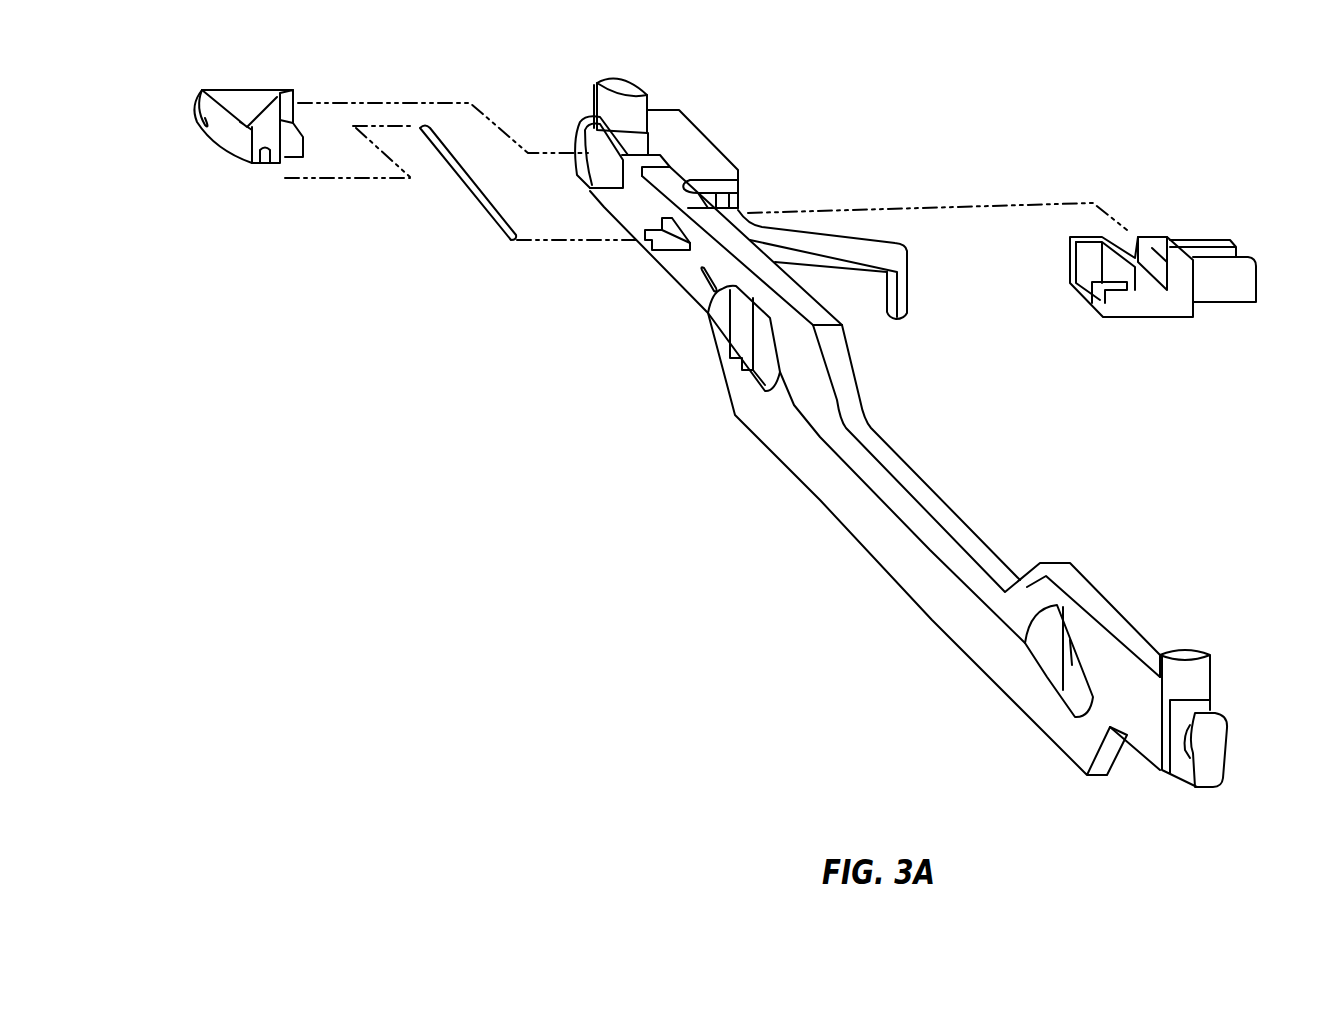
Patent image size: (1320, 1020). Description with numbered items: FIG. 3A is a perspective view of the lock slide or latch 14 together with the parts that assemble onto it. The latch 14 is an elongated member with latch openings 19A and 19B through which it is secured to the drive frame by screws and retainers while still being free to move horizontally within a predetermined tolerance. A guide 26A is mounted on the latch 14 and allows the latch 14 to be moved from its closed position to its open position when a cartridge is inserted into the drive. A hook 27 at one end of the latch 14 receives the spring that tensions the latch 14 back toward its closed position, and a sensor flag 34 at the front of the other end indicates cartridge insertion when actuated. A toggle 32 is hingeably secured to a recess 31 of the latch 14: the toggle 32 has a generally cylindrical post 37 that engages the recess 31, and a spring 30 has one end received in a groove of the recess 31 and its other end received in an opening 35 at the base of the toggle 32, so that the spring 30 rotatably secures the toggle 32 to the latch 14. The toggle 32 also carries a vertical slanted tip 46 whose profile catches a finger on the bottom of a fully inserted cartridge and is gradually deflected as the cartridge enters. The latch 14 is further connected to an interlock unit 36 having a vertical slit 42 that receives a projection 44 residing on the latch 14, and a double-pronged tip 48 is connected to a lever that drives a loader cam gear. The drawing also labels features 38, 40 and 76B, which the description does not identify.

The latch 14 is at (680, 112).
The latch opening 19A is at (740, 358).
The latch opening 19B is at (1057, 677).
The guide 26A is at (625, 92).
The hook 27 is at (1217, 733).
The spring 30 is at (468, 197).
The recess 31 is at (600, 172).
The toggle 32 is at (256, 90).
The sensor flag 34 is at (905, 303).
The opening 35 is at (267, 162).
The interlock unit 36 is at (1152, 233).
The cylindrical post 37 is at (288, 102).
The notch 38 is at (672, 243).
The housing 40 is at (1087, 247).
The vertical slit 42 is at (1153, 300).
The projection 44 is at (740, 203).
The slanted tip 46 is at (252, 108).
The double-pronged tip 48 is at (1225, 238).
The tab 76B is at (1180, 673).